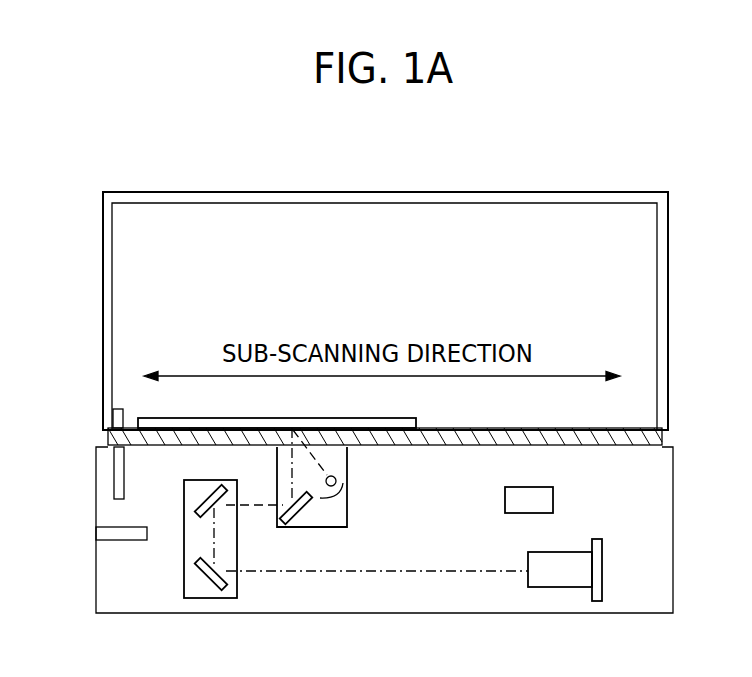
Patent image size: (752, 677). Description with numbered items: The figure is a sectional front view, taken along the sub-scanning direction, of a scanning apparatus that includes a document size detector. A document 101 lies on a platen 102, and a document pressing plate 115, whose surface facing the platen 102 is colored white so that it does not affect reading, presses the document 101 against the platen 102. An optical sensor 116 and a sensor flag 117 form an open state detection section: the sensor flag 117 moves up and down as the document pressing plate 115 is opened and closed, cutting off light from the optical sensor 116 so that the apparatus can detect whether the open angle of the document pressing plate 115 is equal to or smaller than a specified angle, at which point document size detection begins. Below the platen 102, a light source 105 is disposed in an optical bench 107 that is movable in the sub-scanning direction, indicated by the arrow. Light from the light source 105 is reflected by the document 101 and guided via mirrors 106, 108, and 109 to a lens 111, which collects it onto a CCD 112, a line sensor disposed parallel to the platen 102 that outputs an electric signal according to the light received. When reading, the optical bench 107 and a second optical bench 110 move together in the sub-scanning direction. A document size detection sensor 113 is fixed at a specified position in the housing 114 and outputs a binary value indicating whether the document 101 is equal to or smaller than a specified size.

The document 101 is at (198, 418).
The platen 102 is at (483, 428).
The light source 105 is at (336, 478).
The mirror 106 is at (297, 517).
The optical bench 107 is at (347, 508).
The mirror 108 is at (203, 495).
The mirror 109 is at (226, 582).
The optical bench 110 is at (184, 591).
The lens 111 is at (557, 588).
The CCD 112 is at (602, 548).
The document size detection sensor 113 is at (540, 487).
The housing 114 is at (673, 566).
The document pressing plate 115 is at (658, 213).
The optical sensor 116 is at (96, 533).
The sensor flag 117 is at (114, 466).